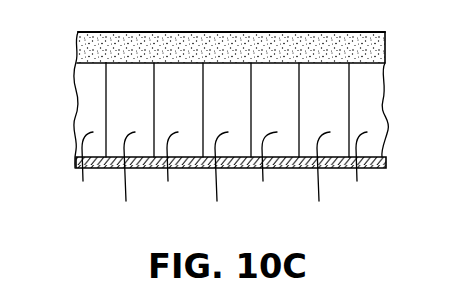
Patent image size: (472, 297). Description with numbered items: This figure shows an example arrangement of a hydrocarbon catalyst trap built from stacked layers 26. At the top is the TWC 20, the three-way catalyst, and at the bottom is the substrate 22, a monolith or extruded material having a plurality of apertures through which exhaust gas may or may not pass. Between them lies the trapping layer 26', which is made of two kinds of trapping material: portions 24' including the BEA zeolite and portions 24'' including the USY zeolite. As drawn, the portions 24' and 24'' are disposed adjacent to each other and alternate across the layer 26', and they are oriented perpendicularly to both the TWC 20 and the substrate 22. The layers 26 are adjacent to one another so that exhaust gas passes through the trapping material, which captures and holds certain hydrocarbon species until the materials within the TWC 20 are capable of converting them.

The TWC 20 is at (378, 42).
The substrate 22 is at (377, 170).
The layers 26 is at (277, 106).
The layer 26' is at (54, 100).
The portions of trapping material 24' is at (221, 168).
The portions of trapping material 24'' is at (226, 177).